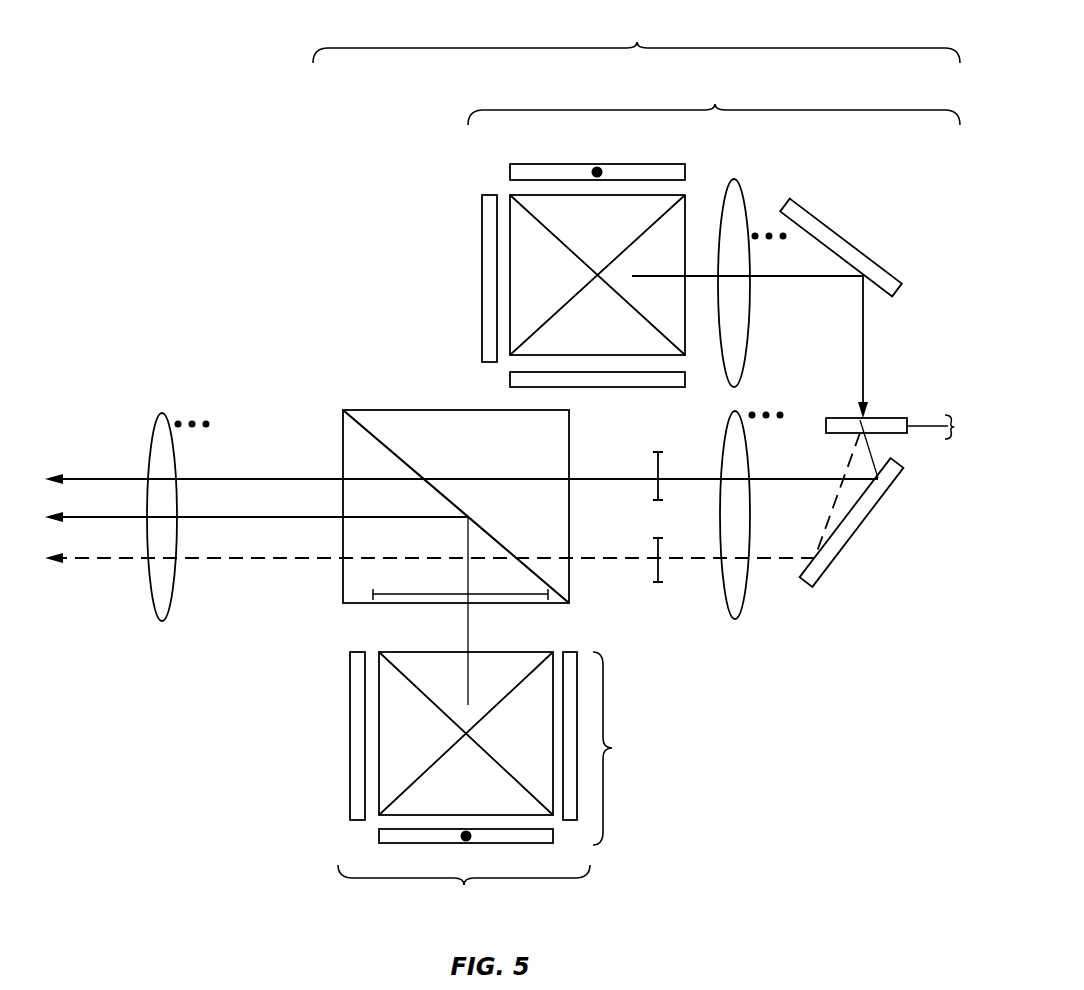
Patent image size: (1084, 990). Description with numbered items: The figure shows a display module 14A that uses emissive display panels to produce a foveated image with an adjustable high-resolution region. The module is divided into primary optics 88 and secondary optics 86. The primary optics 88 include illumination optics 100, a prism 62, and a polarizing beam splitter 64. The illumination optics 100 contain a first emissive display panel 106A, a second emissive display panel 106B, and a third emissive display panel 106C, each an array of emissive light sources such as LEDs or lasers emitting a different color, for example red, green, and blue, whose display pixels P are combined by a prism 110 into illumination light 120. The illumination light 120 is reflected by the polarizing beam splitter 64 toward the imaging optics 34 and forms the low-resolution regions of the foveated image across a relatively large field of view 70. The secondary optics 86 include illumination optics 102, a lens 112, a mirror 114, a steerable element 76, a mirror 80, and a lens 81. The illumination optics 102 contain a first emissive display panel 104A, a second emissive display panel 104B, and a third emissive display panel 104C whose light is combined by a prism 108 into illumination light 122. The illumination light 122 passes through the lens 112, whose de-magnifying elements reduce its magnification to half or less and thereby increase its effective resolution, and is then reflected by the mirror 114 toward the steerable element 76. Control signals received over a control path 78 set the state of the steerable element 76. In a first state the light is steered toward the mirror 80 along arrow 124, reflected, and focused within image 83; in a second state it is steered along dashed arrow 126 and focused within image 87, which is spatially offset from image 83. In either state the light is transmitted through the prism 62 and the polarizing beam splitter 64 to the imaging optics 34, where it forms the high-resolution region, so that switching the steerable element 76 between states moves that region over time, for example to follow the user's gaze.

The display module 14A is at (636, 39).
The secondary optics 86 is at (714, 101).
The primary optics 88 is at (464, 891).
The illumination optics 100 is at (622, 748).
The illumination optics 102 is at (445, 220).
The first emissive display panel 104A is at (510, 173).
The second emissive display panel 104B is at (482, 267).
The third emissive display panel 104C is at (603, 388).
The prism 108 is at (690, 195).
The lens 112 is at (738, 195).
The mirror 114 is at (833, 230).
The illumination light 122 is at (803, 278).
The steerable element 76 is at (880, 416).
The control path 78 is at (927, 430).
The mirror 80 is at (880, 508).
The dashed arrow 126 is at (781, 561).
The arrow 124 is at (791, 481).
The illumination light 120 is at (97, 520).
The imaging optics 34 is at (160, 368).
The prism 62 is at (368, 408).
The polarizing beam splitter 64 is at (385, 440).
The field of view 70 is at (390, 597).
The image 83 is at (658, 450).
The image 87 is at (658, 585).
The lens 81 is at (735, 620).
The prism 110 is at (553, 815).
The first emissive display panel 106A is at (350, 716).
The second emissive display panel 106B is at (379, 832).
The third emissive display panel 106C is at (567, 650).